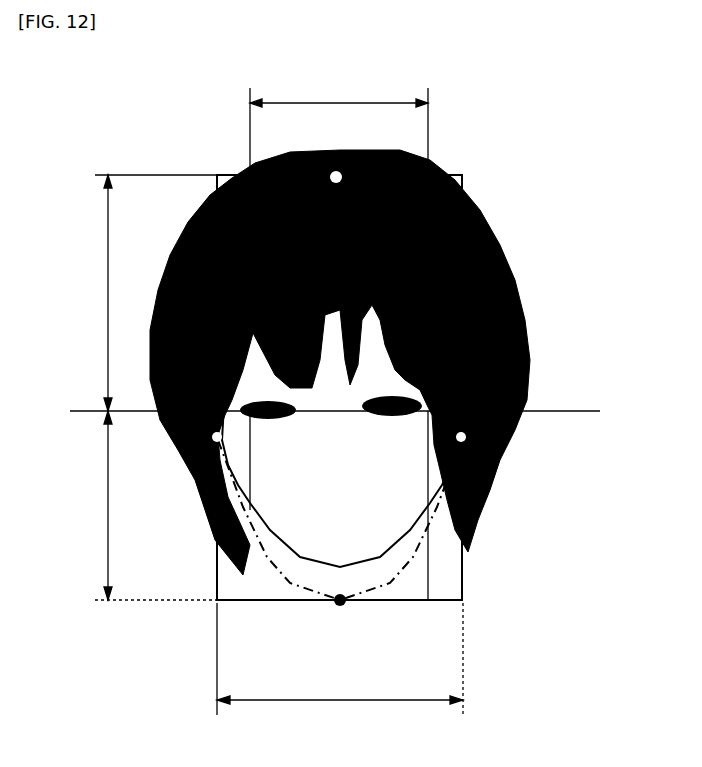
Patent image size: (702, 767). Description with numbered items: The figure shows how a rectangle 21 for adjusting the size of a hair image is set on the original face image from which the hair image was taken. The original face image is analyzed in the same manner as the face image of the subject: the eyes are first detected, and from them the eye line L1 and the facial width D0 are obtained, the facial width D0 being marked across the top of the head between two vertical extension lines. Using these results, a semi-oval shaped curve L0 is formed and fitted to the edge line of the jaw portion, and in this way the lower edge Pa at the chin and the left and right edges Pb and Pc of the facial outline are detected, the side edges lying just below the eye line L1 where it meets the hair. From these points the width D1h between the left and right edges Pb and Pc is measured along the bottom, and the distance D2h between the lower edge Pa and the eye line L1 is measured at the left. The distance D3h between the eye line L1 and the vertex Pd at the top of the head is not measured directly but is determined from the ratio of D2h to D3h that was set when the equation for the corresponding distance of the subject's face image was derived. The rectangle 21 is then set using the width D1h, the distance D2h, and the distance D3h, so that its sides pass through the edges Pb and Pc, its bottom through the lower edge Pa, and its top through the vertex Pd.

The rectangle for size adjustment 21 is at (463, 192).
The semi-oval shaped curve L0 is at (341, 486).
The eye line L1 is at (321, 413).
The facial width D0 is at (339, 340).
The width between left and right edges D1h is at (340, 666).
The distance between lower edge and eye line D2h is at (141, 505).
The distance between eye line and vertex D3h is at (141, 293).
The lower edge Pa is at (337, 619).
The left edge Pb is at (199, 438).
The right edge Pc is at (479, 438).
The vertex Pd is at (331, 166).